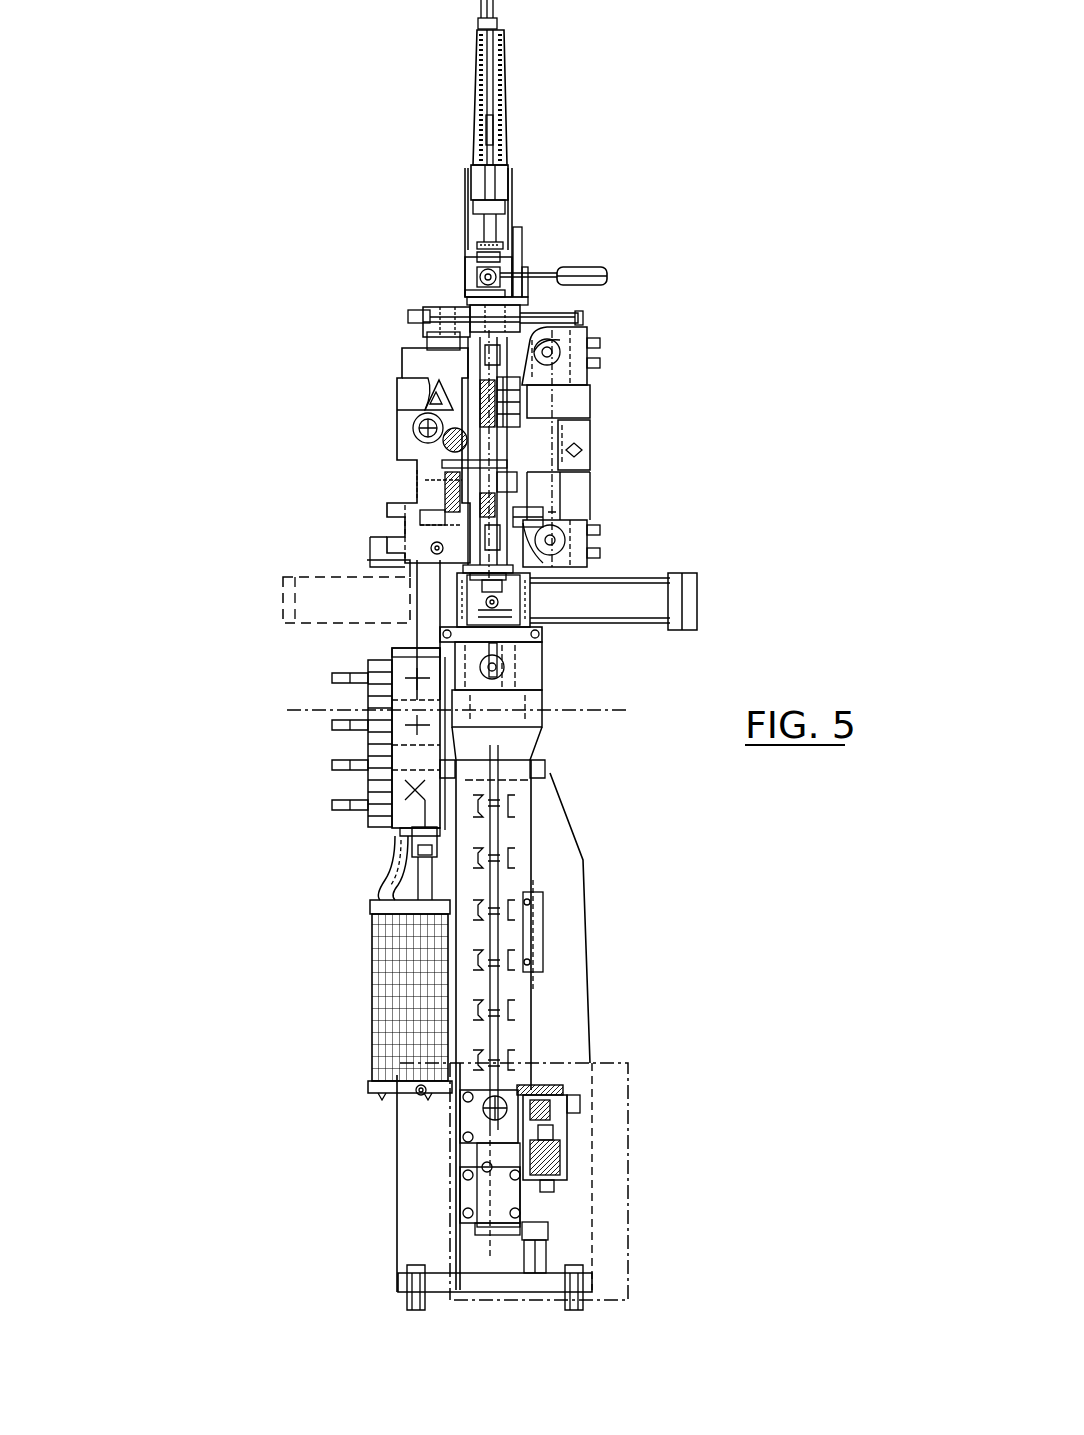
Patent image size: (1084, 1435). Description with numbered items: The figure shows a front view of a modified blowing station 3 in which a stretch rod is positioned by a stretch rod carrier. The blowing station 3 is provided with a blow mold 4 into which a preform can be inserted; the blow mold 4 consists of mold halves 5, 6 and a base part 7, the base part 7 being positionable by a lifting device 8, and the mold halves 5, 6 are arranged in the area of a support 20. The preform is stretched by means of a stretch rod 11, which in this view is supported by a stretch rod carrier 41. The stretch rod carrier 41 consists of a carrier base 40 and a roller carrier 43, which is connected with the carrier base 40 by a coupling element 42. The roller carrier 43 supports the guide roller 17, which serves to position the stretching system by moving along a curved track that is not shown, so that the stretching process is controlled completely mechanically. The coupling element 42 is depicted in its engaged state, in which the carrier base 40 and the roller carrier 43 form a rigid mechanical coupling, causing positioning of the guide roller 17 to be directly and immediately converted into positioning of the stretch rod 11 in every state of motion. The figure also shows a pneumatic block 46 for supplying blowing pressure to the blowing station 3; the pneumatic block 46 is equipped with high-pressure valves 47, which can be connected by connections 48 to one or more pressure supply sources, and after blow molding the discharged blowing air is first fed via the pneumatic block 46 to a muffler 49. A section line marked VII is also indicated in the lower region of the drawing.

The blowing station 3 is at (722, 515).
The blow mold 4 is at (603, 392).
The mold half 5 is at (392, 447).
The mold half 6 is at (630, 458).
The base part 7 is at (435, 277).
The lifting device 8 is at (507, 182).
The stretch rod 11 is at (510, 882).
The guide roller 17 is at (462, 1140).
The support 20 is at (527, 493).
The carrier base 40 is at (462, 1190).
The stretch rod carrier 41 is at (440, 1163).
The coupling element 42 is at (588, 1171).
The roller carrier 43 is at (462, 1120).
The pneumatic block 46 is at (440, 655).
The high-pressure valves 47 is at (382, 823).
The connections 48 is at (335, 805).
The muffler 49 is at (368, 985).
The section VII is at (628, 1123).